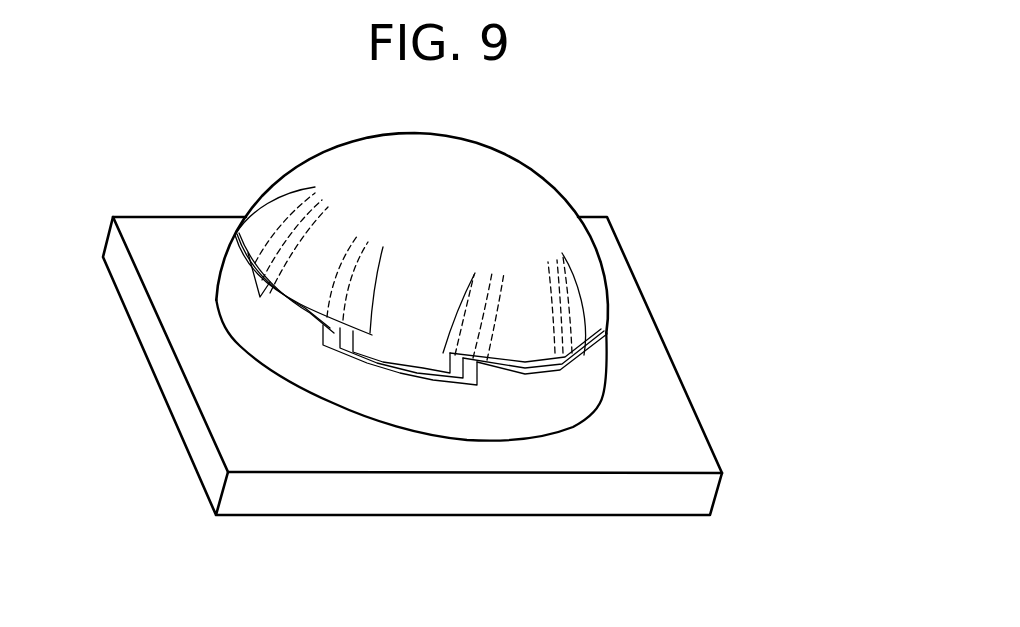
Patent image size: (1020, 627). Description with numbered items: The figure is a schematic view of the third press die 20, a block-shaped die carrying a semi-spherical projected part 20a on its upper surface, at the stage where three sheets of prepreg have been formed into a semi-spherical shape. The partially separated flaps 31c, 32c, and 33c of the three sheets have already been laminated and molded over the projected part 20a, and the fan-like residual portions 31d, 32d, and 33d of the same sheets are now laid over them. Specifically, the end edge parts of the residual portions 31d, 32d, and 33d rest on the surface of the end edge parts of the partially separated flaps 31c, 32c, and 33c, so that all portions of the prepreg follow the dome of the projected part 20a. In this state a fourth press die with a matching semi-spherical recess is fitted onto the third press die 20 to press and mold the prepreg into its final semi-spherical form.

The third press die 20 is at (697, 257).
The semi-spherical projected part 20a is at (600, 368).
The partially separated flap 31c is at (365, 363).
The partially separated flap 32c is at (405, 366).
The partially separated flap 33c is at (447, 373).
The fan-like residual portion 31d is at (258, 281).
The fan-like residual portion 32d is at (312, 304).
The fan-like residual portion 33d is at (330, 312).